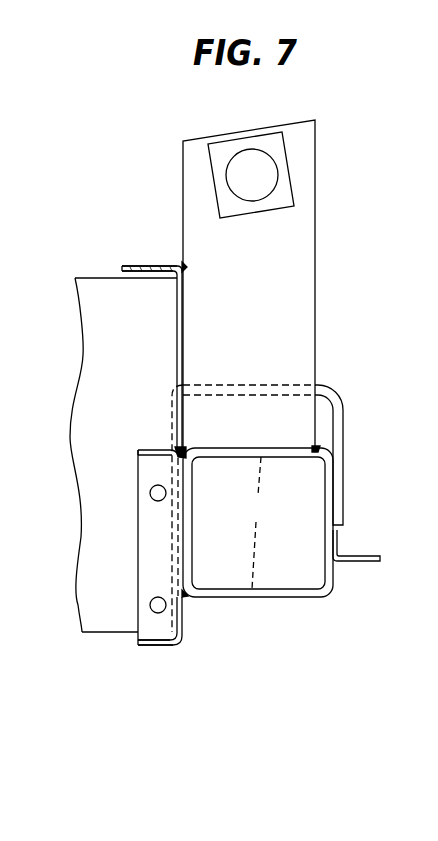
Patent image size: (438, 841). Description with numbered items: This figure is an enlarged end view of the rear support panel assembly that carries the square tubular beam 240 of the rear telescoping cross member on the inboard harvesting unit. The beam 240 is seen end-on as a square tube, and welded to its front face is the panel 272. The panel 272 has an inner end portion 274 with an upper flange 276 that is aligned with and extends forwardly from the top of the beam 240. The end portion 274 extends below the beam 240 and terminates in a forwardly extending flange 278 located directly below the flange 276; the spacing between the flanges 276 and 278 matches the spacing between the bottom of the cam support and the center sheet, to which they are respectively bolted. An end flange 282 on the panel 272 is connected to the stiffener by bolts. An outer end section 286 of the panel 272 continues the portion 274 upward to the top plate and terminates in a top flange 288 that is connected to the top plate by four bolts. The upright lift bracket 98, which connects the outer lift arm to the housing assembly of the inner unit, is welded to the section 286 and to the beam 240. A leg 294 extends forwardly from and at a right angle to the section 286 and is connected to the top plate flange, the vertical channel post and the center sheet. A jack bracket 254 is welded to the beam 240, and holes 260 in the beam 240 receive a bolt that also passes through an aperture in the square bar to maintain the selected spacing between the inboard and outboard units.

The upright bracket 98 is at (266, 316).
The square tubular beam 240 is at (298, 598).
The jack bracket 254 is at (338, 417).
The holes 260 is at (257, 523).
The panel 272 is at (198, 613).
The inner end portion 274 is at (184, 642).
The upper flange 276 is at (147, 449).
The forwardly extending flange 278 is at (150, 647).
The end flange 282 is at (148, 534).
The outer end section 286 is at (177, 338).
The top flange 288 is at (154, 233).
The leg 294 is at (93, 293).